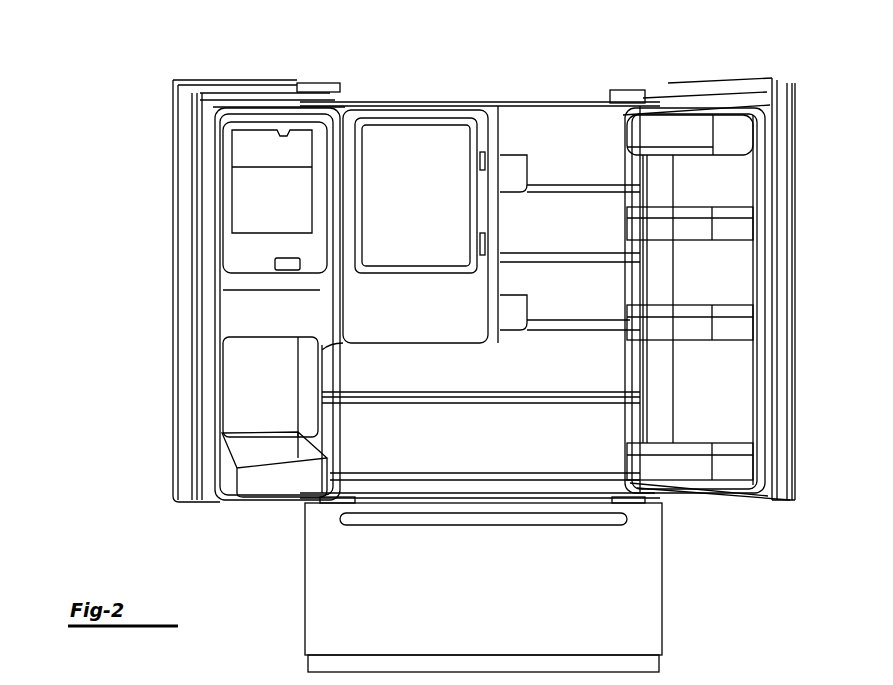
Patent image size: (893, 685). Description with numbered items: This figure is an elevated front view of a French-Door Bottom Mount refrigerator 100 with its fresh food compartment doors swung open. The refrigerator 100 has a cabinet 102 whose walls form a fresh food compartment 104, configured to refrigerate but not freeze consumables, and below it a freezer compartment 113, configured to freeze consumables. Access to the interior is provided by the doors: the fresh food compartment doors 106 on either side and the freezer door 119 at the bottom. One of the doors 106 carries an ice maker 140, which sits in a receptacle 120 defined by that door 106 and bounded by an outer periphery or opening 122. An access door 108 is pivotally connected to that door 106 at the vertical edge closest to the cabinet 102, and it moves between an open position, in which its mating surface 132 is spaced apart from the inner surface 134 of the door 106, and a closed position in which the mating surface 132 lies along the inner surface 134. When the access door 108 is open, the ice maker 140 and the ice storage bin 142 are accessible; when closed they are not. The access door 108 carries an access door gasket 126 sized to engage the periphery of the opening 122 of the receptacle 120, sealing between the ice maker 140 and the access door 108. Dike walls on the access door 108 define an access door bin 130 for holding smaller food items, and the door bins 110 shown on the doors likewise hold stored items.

The refrigerator 100 is at (283, 60).
The cabinet 102 is at (415, 198).
The fresh food compartment 104 is at (579, 265).
The fresh food compartment door 106 is at (165, 402).
The access door 108 is at (486, 228).
The door bins 110 is at (258, 487).
The freezer compartment 113 is at (503, 612).
The freezer door 119 is at (660, 580).
The receptacle 120 is at (186, 197).
The opening 122 is at (222, 170).
The access door gasket 126 is at (412, 272).
The access door bin 130 is at (518, 168).
The mating surface 132 is at (378, 320).
The inner surface 134 is at (238, 293).
The ice maker 140 is at (186, 192).
The ice storage bin 142 is at (252, 226).